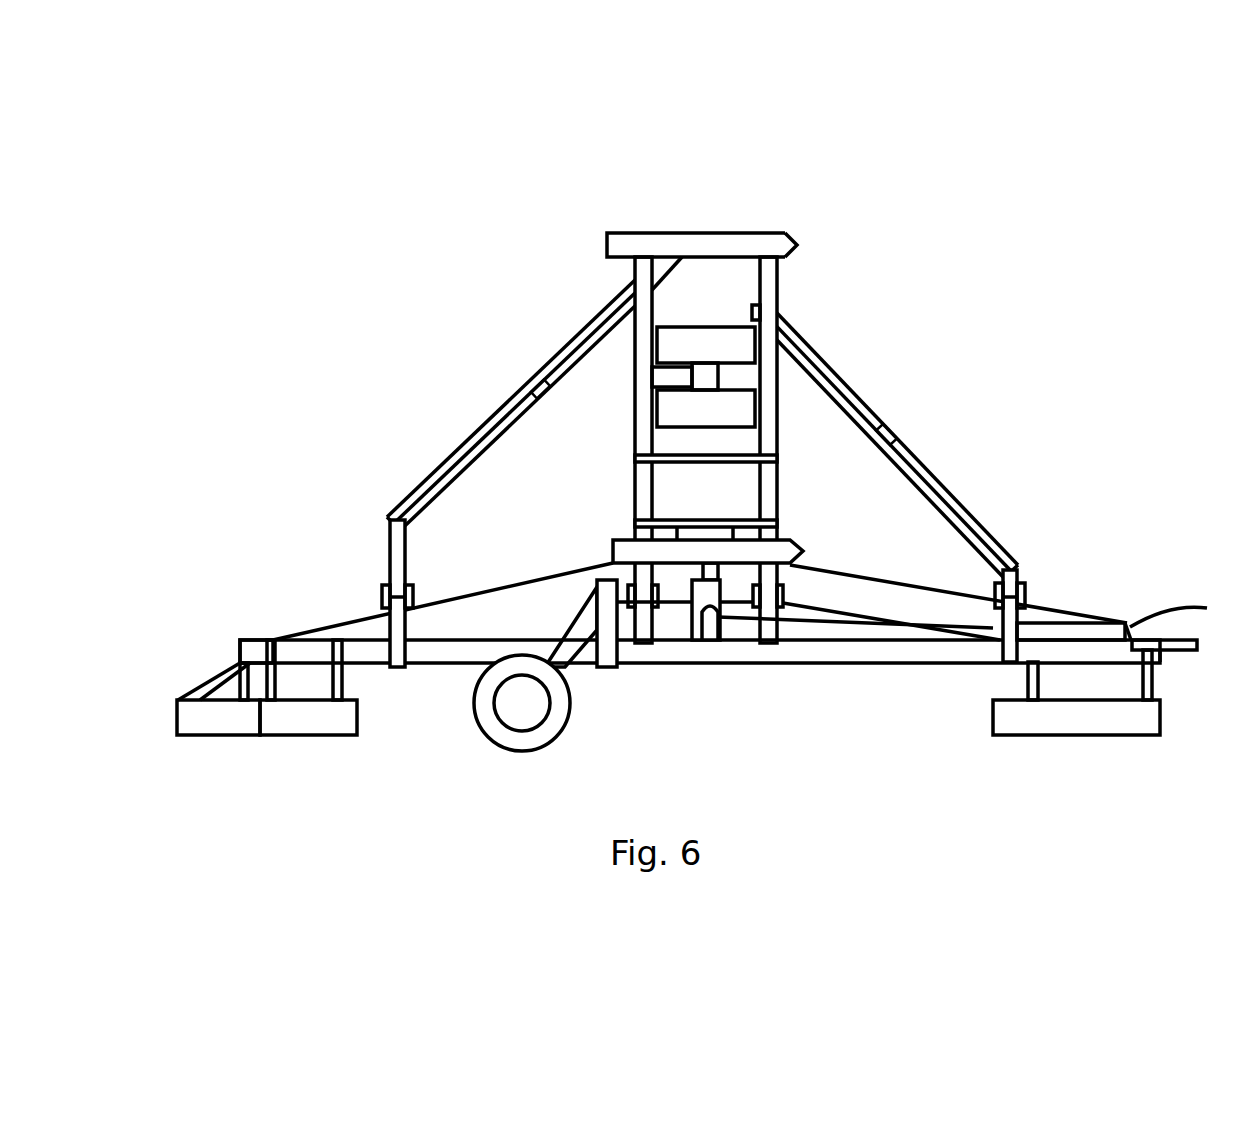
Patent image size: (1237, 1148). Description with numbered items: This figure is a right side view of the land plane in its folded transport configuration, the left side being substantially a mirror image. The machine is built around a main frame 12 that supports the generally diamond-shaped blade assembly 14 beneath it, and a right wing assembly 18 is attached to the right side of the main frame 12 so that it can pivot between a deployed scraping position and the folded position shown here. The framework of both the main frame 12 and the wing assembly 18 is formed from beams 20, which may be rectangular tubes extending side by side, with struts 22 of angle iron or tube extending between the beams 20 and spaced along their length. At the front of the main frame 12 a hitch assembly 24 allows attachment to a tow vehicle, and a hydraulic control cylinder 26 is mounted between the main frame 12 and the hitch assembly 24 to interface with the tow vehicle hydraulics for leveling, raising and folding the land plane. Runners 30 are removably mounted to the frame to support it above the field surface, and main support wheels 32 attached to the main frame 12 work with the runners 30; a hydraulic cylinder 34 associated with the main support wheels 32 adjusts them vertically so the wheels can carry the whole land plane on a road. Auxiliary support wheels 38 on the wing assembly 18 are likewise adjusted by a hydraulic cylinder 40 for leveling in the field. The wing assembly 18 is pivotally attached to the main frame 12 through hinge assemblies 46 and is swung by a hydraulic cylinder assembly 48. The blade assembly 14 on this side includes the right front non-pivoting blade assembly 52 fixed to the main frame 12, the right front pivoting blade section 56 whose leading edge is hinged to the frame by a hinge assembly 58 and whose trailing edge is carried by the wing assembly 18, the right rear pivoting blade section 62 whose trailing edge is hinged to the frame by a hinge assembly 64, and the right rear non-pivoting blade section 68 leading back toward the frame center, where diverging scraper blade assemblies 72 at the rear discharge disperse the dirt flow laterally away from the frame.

The main frame 12 is at (240, 650).
The blade assembly 14 is at (990, 354).
The right wing assembly 18 is at (700, 232).
The beams 20 is at (635, 432).
The struts 22 is at (690, 463).
The hitch assembly 24 is at (1200, 648).
The hydraulic control cylinder 26 is at (1097, 627).
The runners 30 is at (797, 245).
The main support wheels 32 is at (520, 745).
The hydraulic cylinder 34 is at (577, 627).
The auxiliary support wheels 38 is at (713, 338).
The hydraulic cylinder 40 is at (655, 377).
The hinge assemblies 46 is at (640, 645).
The hydraulic cylinder assembly 48 is at (706, 643).
The right front non-pivoting blade assembly 52 is at (1088, 750).
The right front pivoting blade section 56 is at (900, 460).
The hinge assembly 58 is at (1015, 580).
The right rear pivoting blade section 62 is at (483, 460).
The hinge assembly 64 is at (386, 585).
The right rear non-pivoting blade section 68 is at (318, 712).
The diverging scraper blade assemblies 72 is at (232, 722).